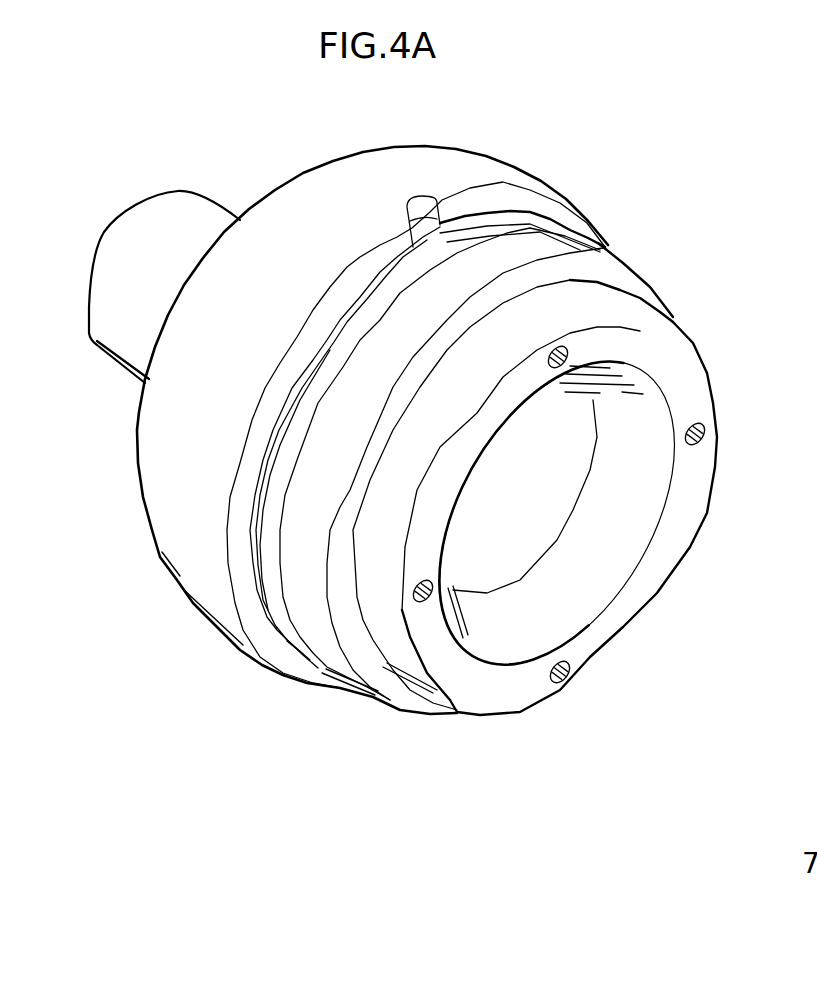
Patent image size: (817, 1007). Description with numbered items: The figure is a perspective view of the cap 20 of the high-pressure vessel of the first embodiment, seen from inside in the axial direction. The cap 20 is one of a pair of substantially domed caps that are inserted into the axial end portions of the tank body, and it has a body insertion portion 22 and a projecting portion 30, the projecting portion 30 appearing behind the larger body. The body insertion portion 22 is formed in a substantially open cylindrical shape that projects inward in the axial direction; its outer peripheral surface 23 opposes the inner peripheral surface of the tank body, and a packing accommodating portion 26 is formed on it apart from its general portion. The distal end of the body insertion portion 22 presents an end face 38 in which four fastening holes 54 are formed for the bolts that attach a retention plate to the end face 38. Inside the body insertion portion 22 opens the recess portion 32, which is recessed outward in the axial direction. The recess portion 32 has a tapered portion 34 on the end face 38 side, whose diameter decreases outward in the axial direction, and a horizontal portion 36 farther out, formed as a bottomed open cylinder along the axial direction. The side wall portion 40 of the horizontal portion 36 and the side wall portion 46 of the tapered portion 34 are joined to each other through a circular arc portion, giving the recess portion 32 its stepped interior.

The cap 20 is at (560, 160).
The body insertion portion 22 is at (656, 254).
The outer peripheral surface 23 is at (416, 399).
The packing accommodating portion 26 is at (500, 435).
The projecting portion 30 is at (163, 233).
The recess portion 32 is at (538, 494).
The tapered portion 34 is at (621, 529).
The horizontal portion 36 is at (513, 538).
The end face 38 is at (743, 344).
The side wall portion 40 is at (610, 496).
The side wall portion 46 is at (643, 506).
The fastening hole 54 is at (497, 742).